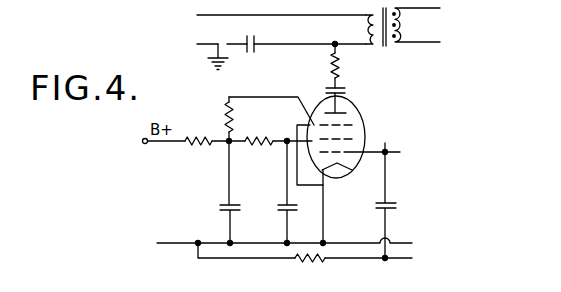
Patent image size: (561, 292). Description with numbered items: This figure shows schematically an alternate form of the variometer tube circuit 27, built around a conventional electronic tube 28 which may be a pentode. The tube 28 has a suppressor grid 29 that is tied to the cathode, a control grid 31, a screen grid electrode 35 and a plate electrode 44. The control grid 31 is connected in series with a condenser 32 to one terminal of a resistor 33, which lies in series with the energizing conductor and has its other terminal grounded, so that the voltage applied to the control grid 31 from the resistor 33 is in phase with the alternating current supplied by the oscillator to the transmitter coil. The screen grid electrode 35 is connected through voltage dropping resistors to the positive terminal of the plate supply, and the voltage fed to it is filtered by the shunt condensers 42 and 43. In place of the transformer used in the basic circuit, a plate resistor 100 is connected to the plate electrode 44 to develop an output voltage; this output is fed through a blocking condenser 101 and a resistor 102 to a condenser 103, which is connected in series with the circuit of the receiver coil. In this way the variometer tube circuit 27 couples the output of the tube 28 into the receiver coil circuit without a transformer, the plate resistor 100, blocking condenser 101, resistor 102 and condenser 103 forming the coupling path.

The variometer tube circuit 27 is at (397, 92).
The electronic tube 28 is at (271, 100).
The suppressor grid 29 is at (345, 125).
The control grid 31 is at (358, 153).
The condenser 32 is at (388, 200).
The resistor 33 is at (311, 262).
The screen grid electrode 35 is at (309, 125).
The shunt condenser 42 is at (228, 206).
The shunt condenser 43 is at (285, 207).
The plate electrode 44 is at (347, 118).
The plate resistor 100 is at (226, 112).
The blocking condenser 101 is at (346, 88).
The resistor 102 is at (341, 62).
The condenser 103 is at (254, 51).